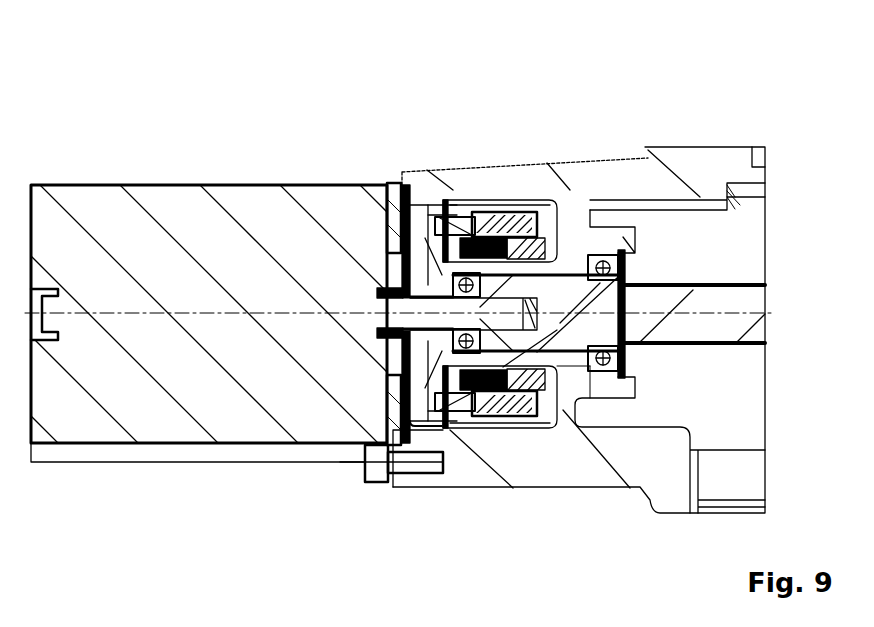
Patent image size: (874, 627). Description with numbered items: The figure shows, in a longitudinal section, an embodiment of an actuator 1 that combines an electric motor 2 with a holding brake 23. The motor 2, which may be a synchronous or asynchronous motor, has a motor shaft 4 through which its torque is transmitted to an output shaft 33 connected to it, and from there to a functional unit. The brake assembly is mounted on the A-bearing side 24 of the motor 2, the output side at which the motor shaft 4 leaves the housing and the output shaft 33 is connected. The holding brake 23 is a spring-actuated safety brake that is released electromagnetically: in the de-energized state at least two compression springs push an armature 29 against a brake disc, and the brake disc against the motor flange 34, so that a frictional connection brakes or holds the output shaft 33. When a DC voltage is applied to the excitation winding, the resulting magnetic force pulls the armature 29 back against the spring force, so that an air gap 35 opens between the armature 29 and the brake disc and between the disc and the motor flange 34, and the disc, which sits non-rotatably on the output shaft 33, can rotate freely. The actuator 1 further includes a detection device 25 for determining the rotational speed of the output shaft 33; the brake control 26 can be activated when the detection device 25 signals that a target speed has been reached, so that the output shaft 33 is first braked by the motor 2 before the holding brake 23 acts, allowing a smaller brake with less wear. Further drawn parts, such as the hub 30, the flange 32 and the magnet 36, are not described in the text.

The actuator 1 is at (645, 68).
The motor 2 is at (143, 200).
The motor shaft 4 is at (400, 325).
The holding brake 23 is at (517, 78).
The A-bearing side 24 is at (380, 90).
The detection device 25 is at (537, 502).
The brake control 26 is at (452, 522).
The armature 29 is at (454, 200).
The hub 30 is at (395, 345).
The flange 32 is at (710, 178).
The output shaft 33 is at (765, 297).
The motor flange 34 is at (387, 185).
The air gap 35 is at (408, 442).
The magnet 36 is at (545, 200).